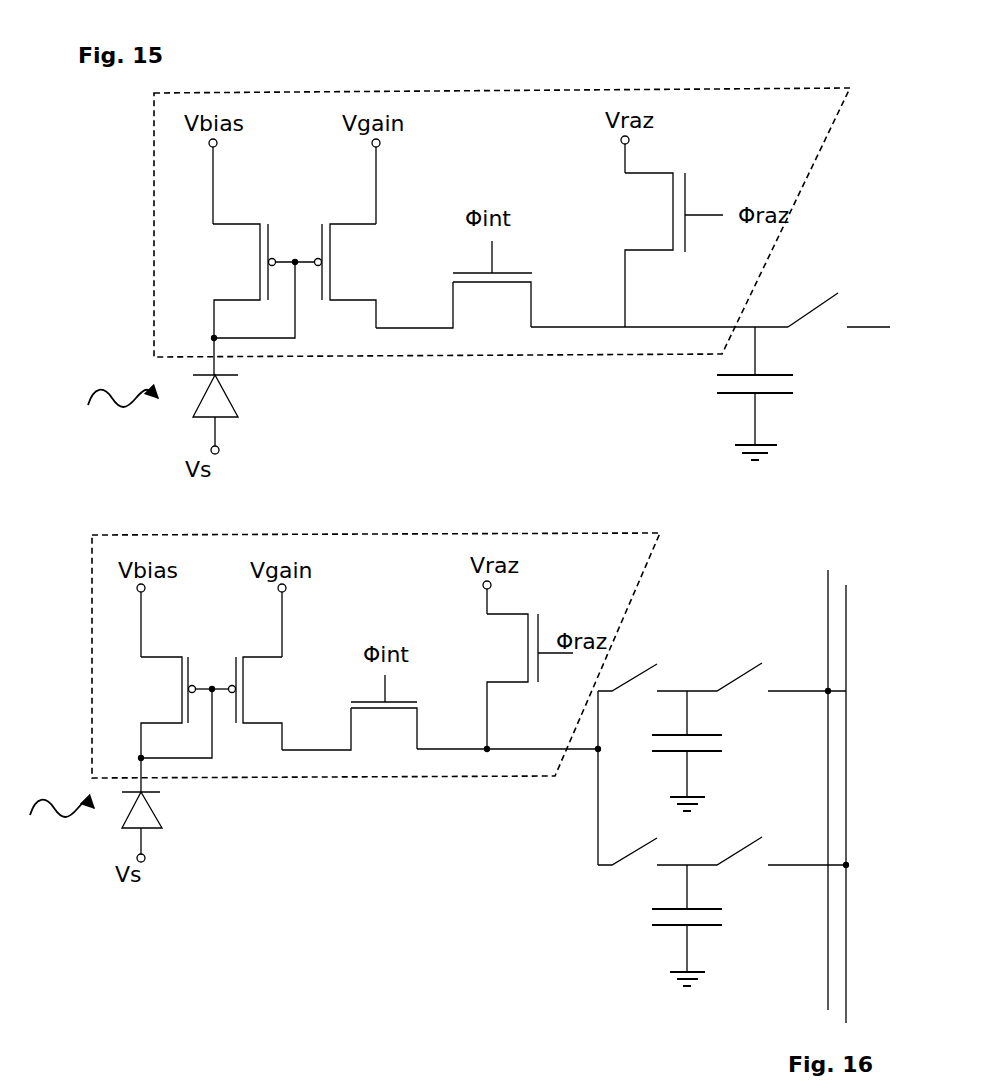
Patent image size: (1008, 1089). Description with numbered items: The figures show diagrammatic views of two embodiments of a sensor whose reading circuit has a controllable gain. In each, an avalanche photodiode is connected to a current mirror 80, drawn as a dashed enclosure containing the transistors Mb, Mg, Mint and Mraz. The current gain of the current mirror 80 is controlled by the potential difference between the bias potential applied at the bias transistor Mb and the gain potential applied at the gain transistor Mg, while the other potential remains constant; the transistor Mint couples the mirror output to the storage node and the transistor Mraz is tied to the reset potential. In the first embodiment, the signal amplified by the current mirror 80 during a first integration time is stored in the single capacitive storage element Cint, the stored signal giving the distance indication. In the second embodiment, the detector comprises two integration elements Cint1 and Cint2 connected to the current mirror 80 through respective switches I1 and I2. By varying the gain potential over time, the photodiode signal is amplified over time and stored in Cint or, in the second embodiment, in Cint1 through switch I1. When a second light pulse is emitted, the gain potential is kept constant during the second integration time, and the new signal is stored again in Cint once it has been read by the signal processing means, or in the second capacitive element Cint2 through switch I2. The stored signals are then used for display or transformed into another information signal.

In FIG. 15, the current mirror 80 is at (472, 80).
In FIG. 16, the current mirror 80 is at (393, 524).
In FIG. 15, the bias transistor Mb is at (251, 262).
In FIG. 16, the bias transistor Mb is at (179, 689).
In FIG. 15, the gain transistor Mg is at (352, 262).
In FIG. 16, the gain transistor Mg is at (262, 689).
In FIG. 15, the integration transistor Mint is at (492, 290).
In FIG. 16, the integration transistor Mint is at (386, 714).
In FIG. 15, the reset transistor Mraz is at (659, 208).
In FIG. 16, the reset transistor Mraz is at (518, 646).
In FIG. 15, the capacitive storage element Cint is at (790, 383).
In FIG. 16, the first integration element Cint1 is at (718, 741).
In FIG. 16, the second capacitive element Cint2 is at (718, 917).
In FIG. 16, the first switch I1 is at (629, 661).
In FIG. 16, the second switch I2 is at (627, 836).